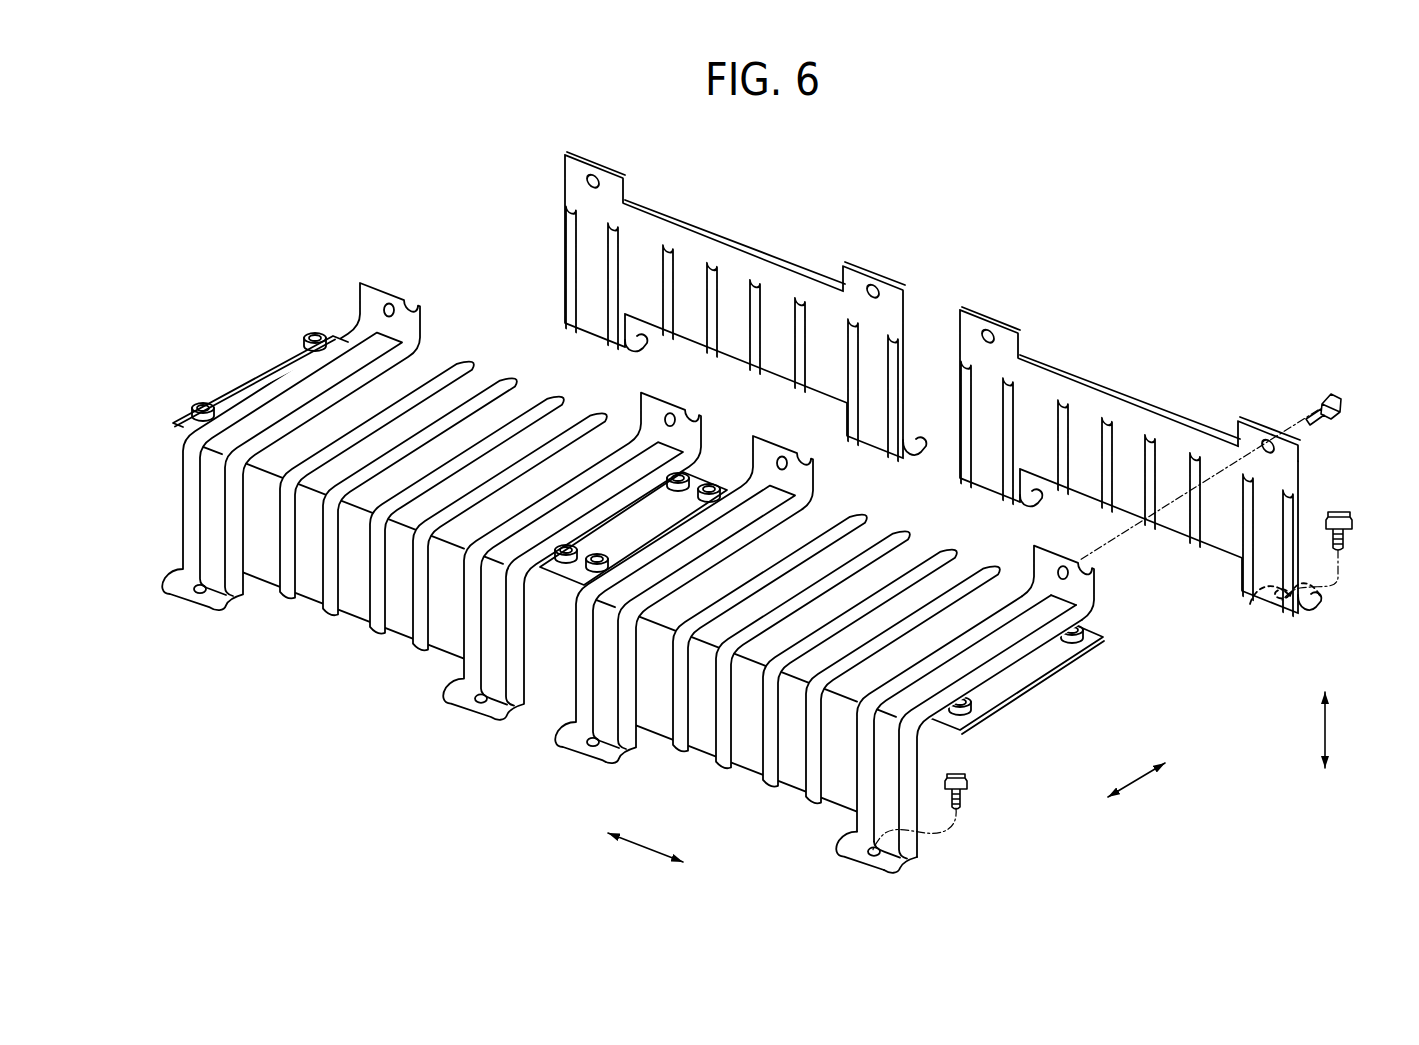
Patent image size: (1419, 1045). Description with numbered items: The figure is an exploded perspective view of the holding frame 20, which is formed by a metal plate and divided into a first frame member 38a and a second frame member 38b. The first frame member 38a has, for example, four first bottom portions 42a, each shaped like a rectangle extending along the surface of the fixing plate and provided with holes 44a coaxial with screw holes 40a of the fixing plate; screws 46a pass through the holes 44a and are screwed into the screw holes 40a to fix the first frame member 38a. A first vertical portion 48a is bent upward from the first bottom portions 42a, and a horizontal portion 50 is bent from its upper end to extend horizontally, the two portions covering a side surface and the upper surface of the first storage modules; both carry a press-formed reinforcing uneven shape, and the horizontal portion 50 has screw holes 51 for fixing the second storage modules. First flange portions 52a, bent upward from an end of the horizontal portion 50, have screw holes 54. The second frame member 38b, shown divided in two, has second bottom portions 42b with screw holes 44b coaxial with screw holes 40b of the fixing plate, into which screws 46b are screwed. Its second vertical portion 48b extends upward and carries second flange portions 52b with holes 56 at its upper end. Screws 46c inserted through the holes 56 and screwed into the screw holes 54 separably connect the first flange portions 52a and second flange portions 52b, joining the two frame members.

The holding frame 20 is at (1216, 263).
The first frame member 38a is at (470, 362).
The second frame member 38b is at (798, 262).
The screw hole 40a is at (844, 875).
The screw hole 40b is at (1278, 606).
The first bottom portion 42a is at (922, 877).
The second bottom portion 42b is at (1312, 606).
The hole 44a is at (877, 857).
The screw hole 44b is at (1256, 600).
The screw 46a is at (960, 812).
The screw 46b is at (1341, 511).
The screw 46c is at (1328, 394).
The first vertical portion 48a is at (890, 746).
The second vertical portion 48b is at (1185, 527).
The horizontal portion 50 is at (982, 652).
The screw hole 51 is at (1073, 646).
The first flange portion 52a is at (1036, 564).
The second flange portion 52b is at (1247, 428).
The screw hole 54 is at (1065, 544).
The hole 56 is at (1267, 438).